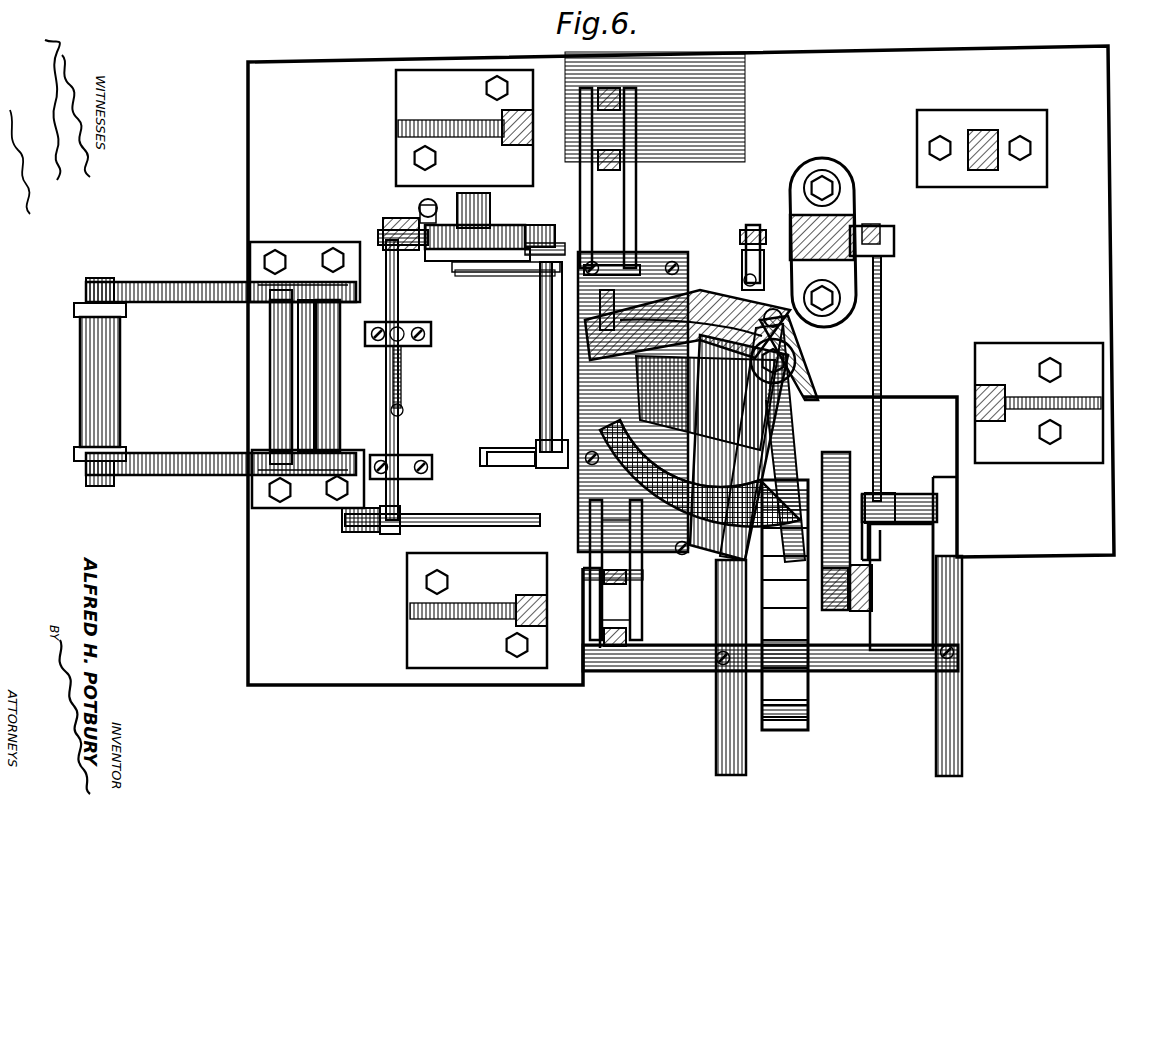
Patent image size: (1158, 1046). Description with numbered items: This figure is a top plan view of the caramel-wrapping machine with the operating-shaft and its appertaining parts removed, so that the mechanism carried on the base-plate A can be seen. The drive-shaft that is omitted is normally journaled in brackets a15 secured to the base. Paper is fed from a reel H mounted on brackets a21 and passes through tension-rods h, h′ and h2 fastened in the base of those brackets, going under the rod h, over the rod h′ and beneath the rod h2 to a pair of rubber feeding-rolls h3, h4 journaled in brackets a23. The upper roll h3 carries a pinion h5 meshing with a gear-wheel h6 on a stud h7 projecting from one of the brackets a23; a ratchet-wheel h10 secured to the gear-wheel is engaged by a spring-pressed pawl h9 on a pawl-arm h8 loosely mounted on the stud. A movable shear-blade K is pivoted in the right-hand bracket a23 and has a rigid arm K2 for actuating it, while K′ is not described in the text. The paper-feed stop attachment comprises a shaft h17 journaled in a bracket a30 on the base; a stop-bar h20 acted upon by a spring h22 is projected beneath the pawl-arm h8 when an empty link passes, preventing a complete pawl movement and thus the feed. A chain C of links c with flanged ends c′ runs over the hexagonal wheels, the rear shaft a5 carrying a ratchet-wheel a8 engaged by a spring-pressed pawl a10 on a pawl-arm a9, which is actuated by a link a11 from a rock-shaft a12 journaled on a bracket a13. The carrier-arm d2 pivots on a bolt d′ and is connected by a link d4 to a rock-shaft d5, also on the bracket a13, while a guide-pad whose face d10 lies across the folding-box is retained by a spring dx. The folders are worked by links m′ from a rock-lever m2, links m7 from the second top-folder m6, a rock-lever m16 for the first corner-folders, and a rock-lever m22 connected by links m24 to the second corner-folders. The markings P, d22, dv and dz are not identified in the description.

The base-plate A is at (681, 365).
The brackets a15 is at (470, 118).
The reel H is at (80, 348).
The brackets a21 is at (176, 290).
The tension-rod h is at (270, 330).
The tension-rod h′ is at (306, 355).
The tension-rod h2 is at (330, 390).
The spring-pressed pawl h9 is at (378, 236).
The pawl-arm h8 is at (395, 220).
The ratchet-wheel h10 is at (432, 218).
The stud h7 is at (490, 198).
The gear-wheel h6 is at (440, 262).
The pinion h5 is at (534, 225).
The brackets a23 is at (548, 246).
The upper feeding-roll h3 is at (540, 302).
The feeding-roll h4 is at (552, 412).
The stop-bar h20 is at (398, 430).
The spring h22 is at (402, 382).
The shaft h17 is at (453, 495).
The bracket a30 is at (392, 532).
The movable shear-blade K is at (535, 448).
The bar end K′ is at (528, 470).
The upwardly-projecting arm K2 is at (590, 500).
The rock-lever m16 is at (640, 85).
The links m′ is at (640, 196).
The rock-lever m2 is at (624, 166).
The face of guide-pad d10 is at (632, 320).
The carrier-arm d2 is at (682, 290).
The sector plate P is at (692, 408).
The curved edge d22 is at (735, 390).
The arm dv is at (748, 480).
The link dz is at (806, 440).
The bolt d′ is at (795, 355).
The spring dx is at (810, 390).
The link d4 is at (740, 285).
The rock-shaft d5 is at (752, 226).
The bracket a13 is at (850, 218).
The rock-shaft a12 is at (880, 222).
The link a11 is at (882, 345).
The ratchet-wheel a8 is at (848, 425).
The rear shaft a5 is at (908, 496).
The pawl-arm a9 is at (868, 545).
The spring-pressed pawl a10 is at (840, 612).
The links c is at (785, 605).
The chain C is at (808, 688).
The flanged ends c′ is at (808, 720).
The links m7 is at (604, 546).
The second top-folder m6 is at (626, 582).
The rock-lever m22 is at (628, 634).
The links m24 is at (590, 640).